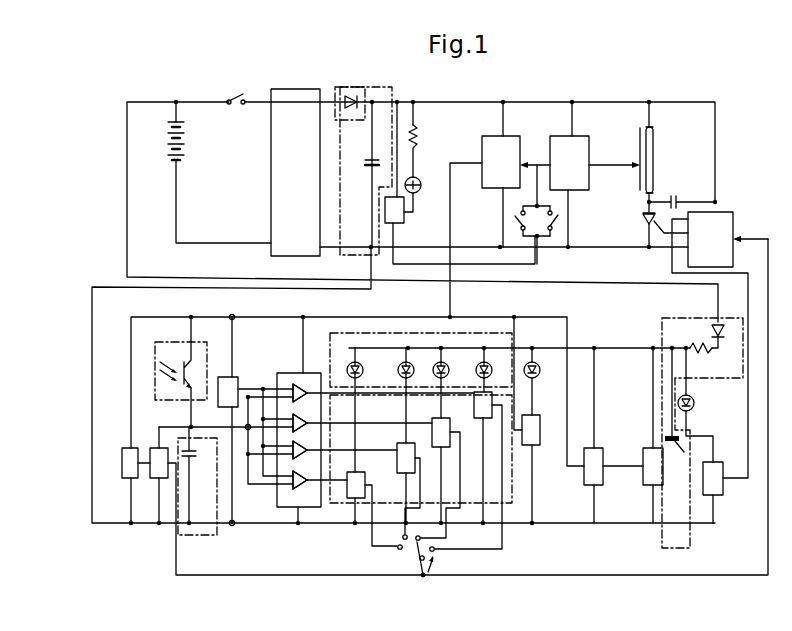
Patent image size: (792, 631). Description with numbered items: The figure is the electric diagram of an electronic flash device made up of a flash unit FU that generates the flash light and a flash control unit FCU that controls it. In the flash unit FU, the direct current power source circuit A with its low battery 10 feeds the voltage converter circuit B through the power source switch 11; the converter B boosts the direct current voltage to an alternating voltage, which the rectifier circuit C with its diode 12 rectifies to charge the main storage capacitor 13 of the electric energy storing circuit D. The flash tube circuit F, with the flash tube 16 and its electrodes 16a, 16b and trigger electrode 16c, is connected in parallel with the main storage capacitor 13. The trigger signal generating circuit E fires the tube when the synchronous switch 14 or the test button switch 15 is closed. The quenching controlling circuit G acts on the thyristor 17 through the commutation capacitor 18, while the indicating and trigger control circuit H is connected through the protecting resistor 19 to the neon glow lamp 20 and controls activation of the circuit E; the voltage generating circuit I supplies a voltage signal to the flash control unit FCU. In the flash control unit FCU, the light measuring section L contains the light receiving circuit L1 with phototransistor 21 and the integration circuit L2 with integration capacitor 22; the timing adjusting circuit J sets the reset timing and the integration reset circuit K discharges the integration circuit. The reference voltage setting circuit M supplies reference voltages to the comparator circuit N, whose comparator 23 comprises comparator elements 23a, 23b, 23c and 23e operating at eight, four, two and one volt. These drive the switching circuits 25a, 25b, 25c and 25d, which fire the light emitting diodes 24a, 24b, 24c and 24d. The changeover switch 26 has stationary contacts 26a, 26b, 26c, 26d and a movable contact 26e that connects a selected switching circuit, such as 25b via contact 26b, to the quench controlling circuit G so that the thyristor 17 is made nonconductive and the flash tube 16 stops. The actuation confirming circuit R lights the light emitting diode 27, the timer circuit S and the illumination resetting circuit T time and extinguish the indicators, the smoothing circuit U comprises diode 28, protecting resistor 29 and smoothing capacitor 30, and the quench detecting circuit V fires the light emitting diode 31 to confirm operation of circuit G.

The battery 10 is at (171, 139).
The power source switch 11 is at (236, 96).
The diode 12 is at (345, 99).
The main storage capacitor 13 is at (364, 163).
The synchronous switch 14 is at (553, 212).
The test button switch 15 is at (512, 236).
The flash tube 16 is at (655, 154).
The tube electrode 16a is at (646, 129).
The tube electrode 16b is at (653, 194).
The trigger electrode 16c is at (639, 181).
The thyristor 17 is at (642, 223).
The commutation capacitor 18 is at (680, 200).
The protecting resistor 19 is at (415, 141).
The neon glow lamp 20 is at (419, 189).
The phototransistor 21 is at (182, 366).
The integration capacitor 22 is at (197, 454).
The comparator 23 is at (292, 372).
The comparator 23a is at (292, 384).
The comparator 23b is at (305, 415).
The comparator 23c is at (306, 444).
The comparator 23e is at (302, 485).
The light emitting diode 24a is at (475, 370).
The light emitting diode 24b is at (434, 370).
The light emitting diode 24c is at (397, 370).
The light emitting diode 24d is at (351, 364).
The switching circuit 25a is at (475, 404).
The switching circuit 25b is at (432, 420).
The switching circuit 25c is at (397, 442).
The switching circuit 25d is at (365, 470).
The changeover switch 26 is at (429, 578).
The switch contact 26a is at (434, 551).
The stationary contact 26b is at (421, 538).
The switch contact 26c is at (403, 538).
The switch contact 26d is at (397, 549).
The movable contact 26e is at (419, 560).
The light emitting diode 27 is at (539, 373).
The diode 28 is at (721, 333).
The protecting resistor 29 is at (690, 346).
The smoothing capacitor 30 is at (678, 460).
The light emitting diode 31 is at (694, 407).
The direct current power source circuit A is at (167, 156).
The voltage converter circuit B is at (295, 172).
The rectifier circuit C is at (340, 88).
The electric energy storing circuit D is at (391, 88).
The trigger signal generating circuit E is at (569, 163).
The flash tube circuit F is at (655, 126).
The flash unit FU is at (545, 102).
The flash control unit FCU is at (530, 580).
The quenching controlling circuit G is at (710, 239).
The indicating and trigger control circuit H is at (394, 210).
The voltage generating circuit I is at (501, 162).
The timing adjusting circuit J is at (130, 463).
The integration reset circuit K is at (159, 463).
The light measuring circuit L is at (216, 532).
The light receiving circuit L1 is at (163, 346).
The integration circuit L2 is at (198, 536).
The reference voltage setting circuit M is at (228, 392).
The comparator circuit N is at (276, 500).
The actuation confirming circuit R is at (531, 430).
The timer circuit S is at (593, 466).
The illumination resetting circuit T is at (653, 466).
The smoothing circuit U is at (689, 547).
The quench detecting circuit V is at (713, 478).